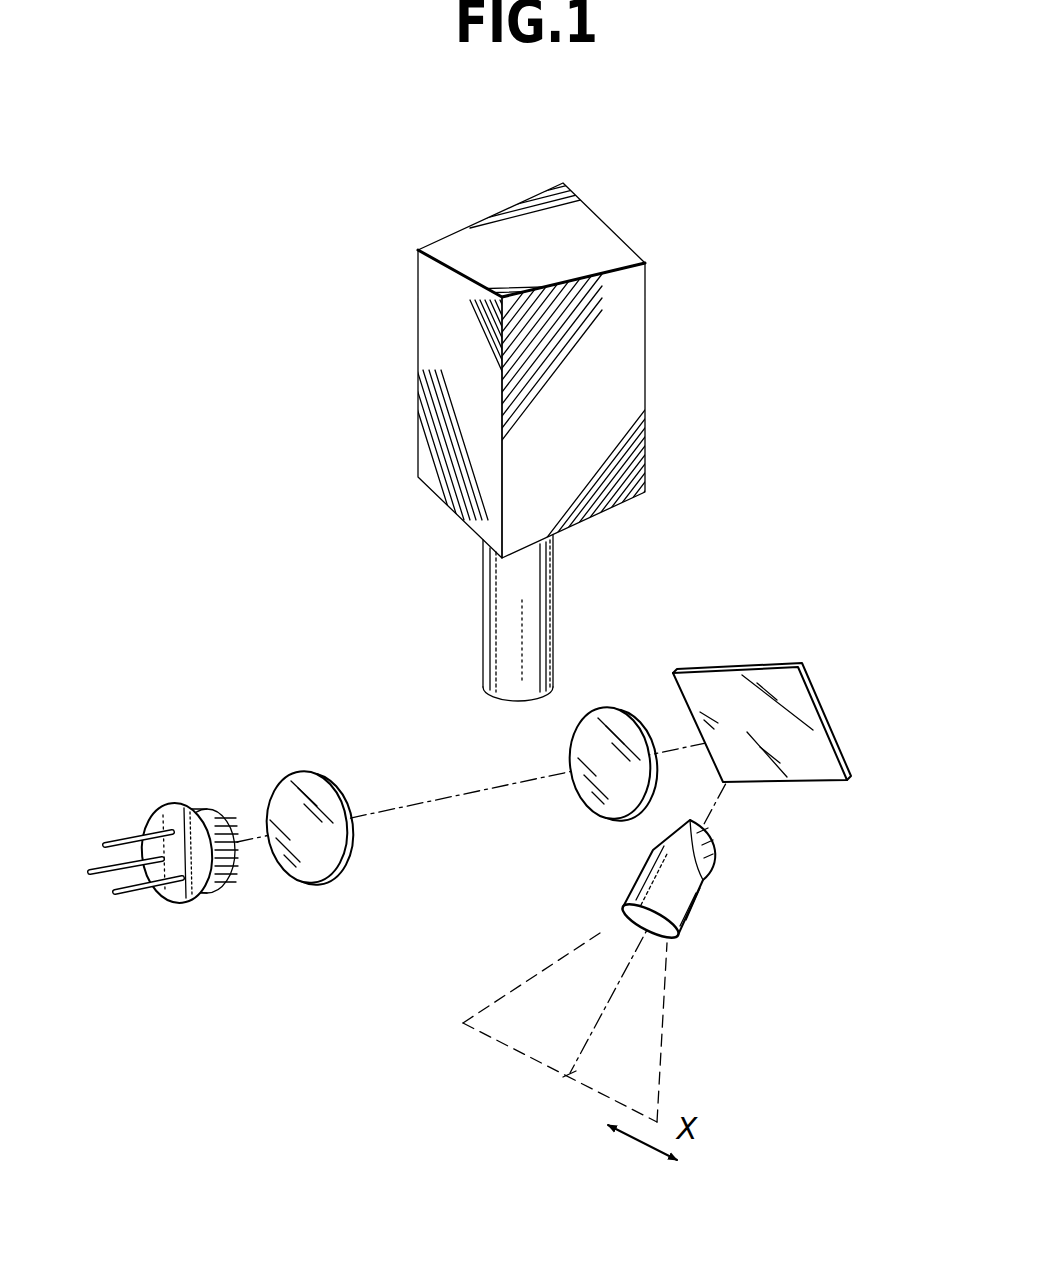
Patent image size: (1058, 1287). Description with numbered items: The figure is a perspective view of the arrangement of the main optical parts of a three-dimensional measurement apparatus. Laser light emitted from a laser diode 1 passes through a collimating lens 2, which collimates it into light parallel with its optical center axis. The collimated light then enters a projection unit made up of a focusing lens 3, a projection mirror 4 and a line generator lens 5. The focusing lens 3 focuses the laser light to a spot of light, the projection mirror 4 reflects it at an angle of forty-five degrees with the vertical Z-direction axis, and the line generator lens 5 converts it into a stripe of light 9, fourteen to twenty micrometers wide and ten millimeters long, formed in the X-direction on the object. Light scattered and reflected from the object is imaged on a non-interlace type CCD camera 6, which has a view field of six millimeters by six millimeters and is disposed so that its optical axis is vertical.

The laser diode 1 is at (172, 803).
The collimating lens 2 is at (297, 770).
The focusing lens 3 is at (610, 703).
The projection mirror 4 is at (830, 723).
The line generator lens 5 is at (700, 907).
The CCD camera 6 is at (569, 433).
The stripe of light 9 is at (527, 1057).